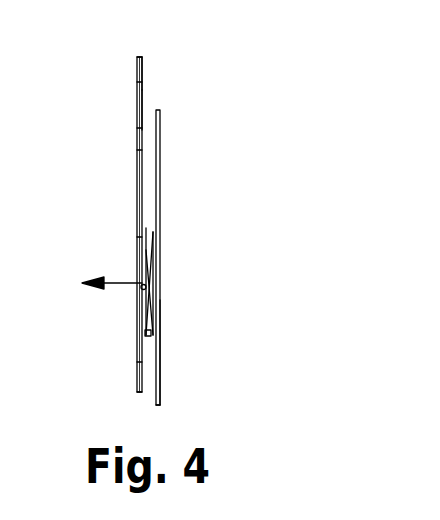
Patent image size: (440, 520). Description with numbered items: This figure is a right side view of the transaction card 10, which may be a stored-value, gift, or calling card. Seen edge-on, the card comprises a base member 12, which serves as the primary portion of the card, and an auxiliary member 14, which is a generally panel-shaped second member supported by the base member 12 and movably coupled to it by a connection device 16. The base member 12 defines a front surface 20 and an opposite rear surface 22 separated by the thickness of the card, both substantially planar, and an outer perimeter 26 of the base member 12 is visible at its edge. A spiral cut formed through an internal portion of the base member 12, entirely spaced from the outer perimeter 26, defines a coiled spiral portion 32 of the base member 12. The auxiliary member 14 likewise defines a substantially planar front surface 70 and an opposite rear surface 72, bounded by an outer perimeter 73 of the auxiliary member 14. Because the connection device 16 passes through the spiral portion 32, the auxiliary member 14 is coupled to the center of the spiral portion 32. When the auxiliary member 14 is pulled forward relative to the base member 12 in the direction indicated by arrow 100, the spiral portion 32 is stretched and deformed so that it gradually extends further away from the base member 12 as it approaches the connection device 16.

The transaction card 10 is at (90, 62).
The base member 12 is at (160, 123).
The auxiliary member 14 is at (142, 65).
The connection device 16 is at (139, 288).
The front surface 20 is at (156, 396).
The rear surface 22 is at (161, 358).
The outer perimeter 26 is at (160, 405).
The spiral portion 32 is at (146, 228).
The front surface 70 is at (137, 168).
The rear surface 72 is at (142, 90).
The outer perimeter 73 is at (138, 57).
The arrow 100 is at (117, 283).